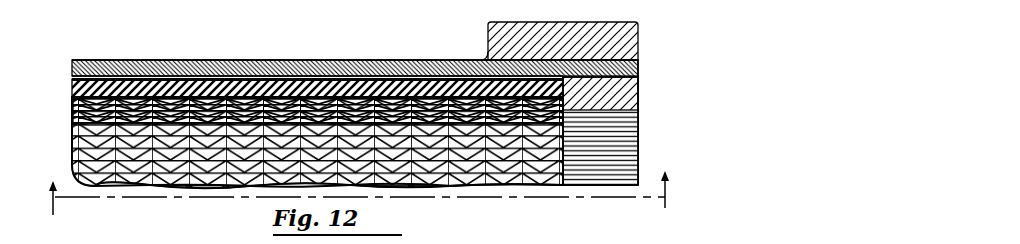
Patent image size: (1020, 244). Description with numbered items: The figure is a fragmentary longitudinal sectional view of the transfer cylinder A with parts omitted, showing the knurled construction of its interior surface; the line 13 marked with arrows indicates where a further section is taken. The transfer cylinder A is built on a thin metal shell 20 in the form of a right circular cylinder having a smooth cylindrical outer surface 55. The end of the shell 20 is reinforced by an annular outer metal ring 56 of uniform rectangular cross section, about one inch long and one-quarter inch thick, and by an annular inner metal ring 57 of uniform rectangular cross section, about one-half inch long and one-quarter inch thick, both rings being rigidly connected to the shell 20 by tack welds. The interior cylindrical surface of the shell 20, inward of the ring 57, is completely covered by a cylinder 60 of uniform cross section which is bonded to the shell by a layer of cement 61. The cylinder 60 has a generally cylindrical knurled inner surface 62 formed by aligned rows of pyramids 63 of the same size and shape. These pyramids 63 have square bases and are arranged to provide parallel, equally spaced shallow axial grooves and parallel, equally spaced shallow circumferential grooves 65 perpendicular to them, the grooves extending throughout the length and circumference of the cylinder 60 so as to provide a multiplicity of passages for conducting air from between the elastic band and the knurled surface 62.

The transfer cylinder A is at (167, 61).
The section line 13- 13 is at (357, 193).
The thin metal shell 20 is at (317, 61).
The smooth cylindrical outer surface 55 is at (383, 61).
The annular outer metal ring 56 is at (638, 33).
The annular inner metal ring 57 is at (638, 92).
The cylinder 60 is at (253, 80).
The layer of cement 61 is at (188, 80).
The knurled inner surface 62 is at (72, 112).
The pyramids 63 is at (207, 175).
The circumferential grooves 65 is at (430, 185).